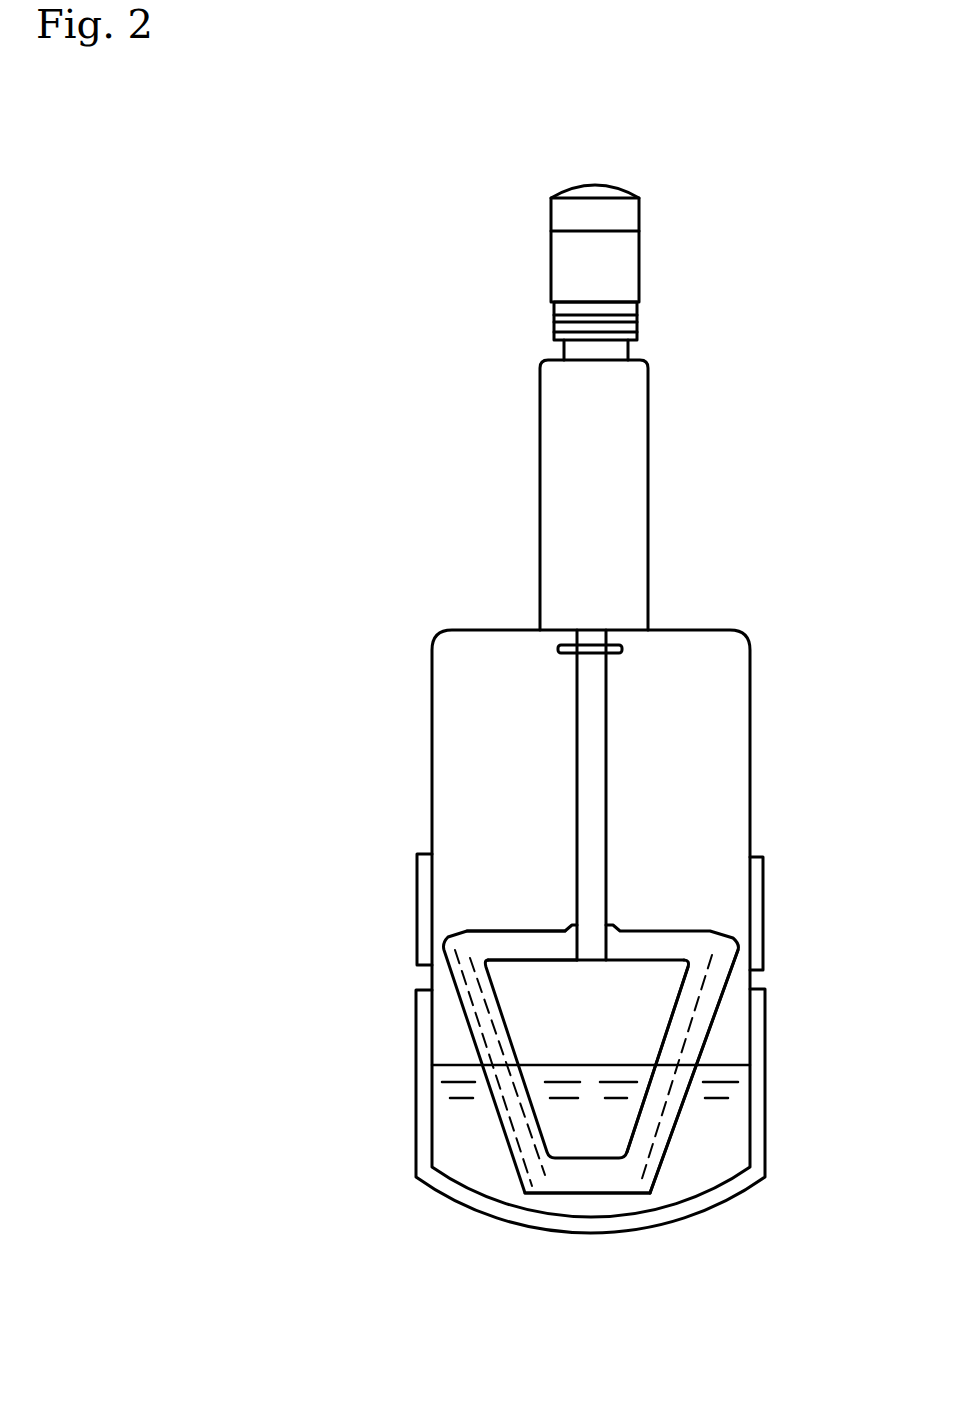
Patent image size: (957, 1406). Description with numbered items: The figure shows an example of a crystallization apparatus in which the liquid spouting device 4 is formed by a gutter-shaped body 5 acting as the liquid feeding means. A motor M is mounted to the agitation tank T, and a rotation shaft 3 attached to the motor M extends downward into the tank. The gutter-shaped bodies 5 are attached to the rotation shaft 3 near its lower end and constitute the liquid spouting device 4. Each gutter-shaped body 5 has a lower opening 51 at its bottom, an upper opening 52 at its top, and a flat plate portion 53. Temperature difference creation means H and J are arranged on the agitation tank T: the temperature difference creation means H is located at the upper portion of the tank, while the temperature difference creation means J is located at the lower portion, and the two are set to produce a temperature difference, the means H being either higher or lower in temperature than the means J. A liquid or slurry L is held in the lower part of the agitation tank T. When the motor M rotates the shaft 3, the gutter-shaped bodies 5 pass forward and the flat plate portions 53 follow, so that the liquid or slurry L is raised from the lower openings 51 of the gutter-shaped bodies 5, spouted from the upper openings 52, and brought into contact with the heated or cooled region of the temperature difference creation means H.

The motor M is at (630, 278).
The agitation tank T is at (723, 630).
The rotation shaft 3 is at (609, 705).
The liquid spouting device 4 is at (621, 918).
The gutter-shaped body 5 is at (715, 1013).
The lower opening 51 is at (538, 1195).
The upper opening 52 is at (453, 932).
The flat plate portion 53 is at (535, 940).
The temperature difference creation means H is at (753, 869).
The liquid L is at (593, 1063).
The temperature difference creation means J is at (765, 1118).